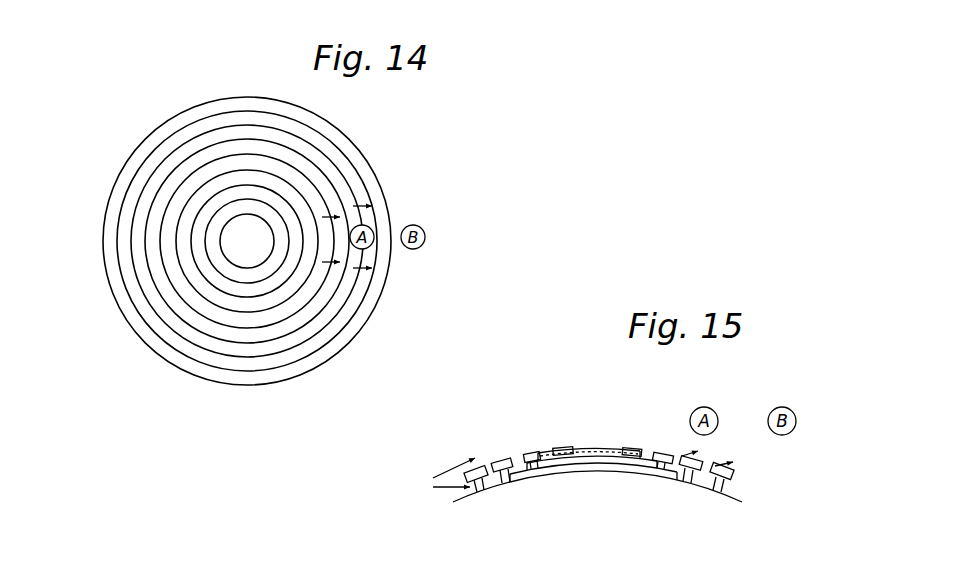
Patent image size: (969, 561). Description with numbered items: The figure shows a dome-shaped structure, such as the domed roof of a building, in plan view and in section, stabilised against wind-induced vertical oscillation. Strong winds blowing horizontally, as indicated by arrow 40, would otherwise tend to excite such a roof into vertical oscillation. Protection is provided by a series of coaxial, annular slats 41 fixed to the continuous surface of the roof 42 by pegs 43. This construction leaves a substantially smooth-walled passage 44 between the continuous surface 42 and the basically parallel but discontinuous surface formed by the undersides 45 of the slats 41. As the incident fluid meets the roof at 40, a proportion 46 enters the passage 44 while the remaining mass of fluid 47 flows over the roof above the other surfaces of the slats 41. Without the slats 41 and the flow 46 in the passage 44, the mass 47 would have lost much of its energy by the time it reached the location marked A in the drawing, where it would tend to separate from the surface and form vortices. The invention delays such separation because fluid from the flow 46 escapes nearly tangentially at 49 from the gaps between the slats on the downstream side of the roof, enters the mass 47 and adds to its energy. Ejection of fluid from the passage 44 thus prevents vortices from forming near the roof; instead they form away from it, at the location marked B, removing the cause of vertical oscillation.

In FIG. 14, the arrow indicating horizontal wind 40 is at (90, 243).
In FIG. 15, the arrow indicating horizontal wind 40 is at (402, 483).
In FIG. 14, the coaxial annular slats 41 is at (263, 207).
In FIG. 15, the coaxial annular slats 41 is at (507, 462).
In FIG. 14, the roof surface 42 is at (236, 252).
In FIG. 15, the roof surface 42 is at (592, 465).
In FIG. 15, the pegs 43 is at (500, 473).
In FIG. 15, the passage 44 is at (550, 473).
In FIG. 15, the undersides of slats 45 is at (622, 472).
In FIG. 15, the fluid proportion entering passage 46 is at (448, 485).
In FIG. 15, the remaining fluid mass 47 is at (457, 465).
In FIG. 15, the escape location 49 is at (703, 470).